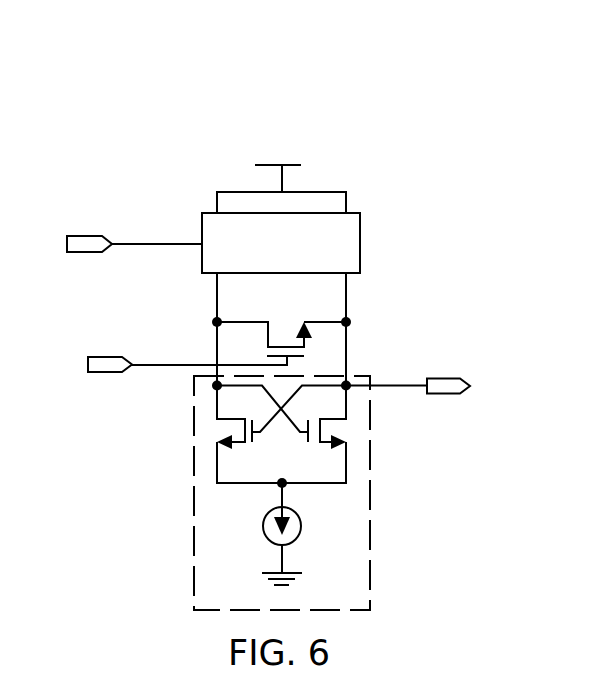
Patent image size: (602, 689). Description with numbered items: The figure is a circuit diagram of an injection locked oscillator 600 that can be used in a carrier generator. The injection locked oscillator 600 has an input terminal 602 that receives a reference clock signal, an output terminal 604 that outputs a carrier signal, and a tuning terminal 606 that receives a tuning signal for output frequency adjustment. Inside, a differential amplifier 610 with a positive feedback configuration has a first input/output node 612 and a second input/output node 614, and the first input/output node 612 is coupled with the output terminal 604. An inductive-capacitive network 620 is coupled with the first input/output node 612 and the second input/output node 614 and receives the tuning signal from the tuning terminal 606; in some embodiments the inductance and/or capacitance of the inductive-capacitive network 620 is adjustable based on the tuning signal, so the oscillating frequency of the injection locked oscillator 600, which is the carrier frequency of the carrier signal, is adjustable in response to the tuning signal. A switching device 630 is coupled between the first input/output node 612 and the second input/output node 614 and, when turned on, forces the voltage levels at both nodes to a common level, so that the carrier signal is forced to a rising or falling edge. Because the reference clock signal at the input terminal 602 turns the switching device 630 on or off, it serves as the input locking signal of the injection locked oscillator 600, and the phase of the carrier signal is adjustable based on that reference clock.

The injection locked oscillator 600 is at (369, 138).
The input terminal 602 is at (102, 372).
The output terminal 604 is at (450, 394).
The tuning terminal 606 is at (73, 252).
The differential amplifier 610 is at (194, 553).
The first input/output node 612 is at (347, 323).
The second input/output node 614 is at (192, 330).
The inductive-capacitive network 620 is at (360, 243).
The switching device 630 is at (288, 320).